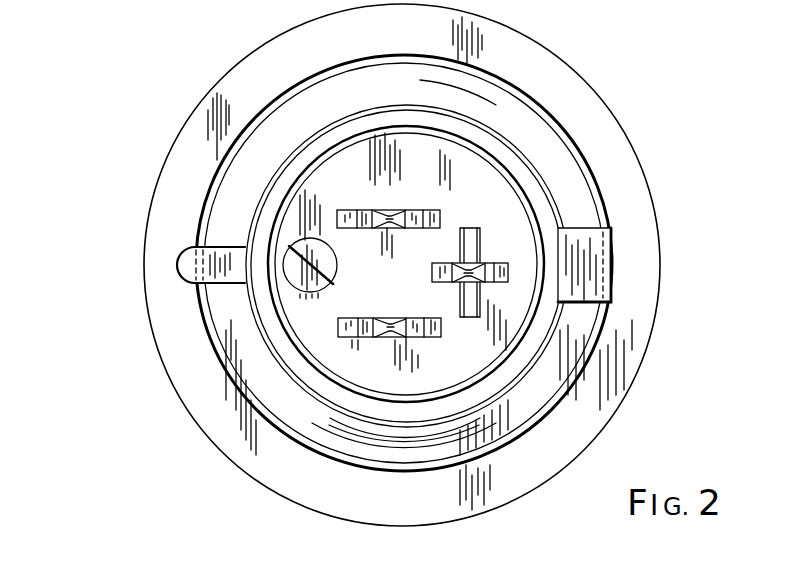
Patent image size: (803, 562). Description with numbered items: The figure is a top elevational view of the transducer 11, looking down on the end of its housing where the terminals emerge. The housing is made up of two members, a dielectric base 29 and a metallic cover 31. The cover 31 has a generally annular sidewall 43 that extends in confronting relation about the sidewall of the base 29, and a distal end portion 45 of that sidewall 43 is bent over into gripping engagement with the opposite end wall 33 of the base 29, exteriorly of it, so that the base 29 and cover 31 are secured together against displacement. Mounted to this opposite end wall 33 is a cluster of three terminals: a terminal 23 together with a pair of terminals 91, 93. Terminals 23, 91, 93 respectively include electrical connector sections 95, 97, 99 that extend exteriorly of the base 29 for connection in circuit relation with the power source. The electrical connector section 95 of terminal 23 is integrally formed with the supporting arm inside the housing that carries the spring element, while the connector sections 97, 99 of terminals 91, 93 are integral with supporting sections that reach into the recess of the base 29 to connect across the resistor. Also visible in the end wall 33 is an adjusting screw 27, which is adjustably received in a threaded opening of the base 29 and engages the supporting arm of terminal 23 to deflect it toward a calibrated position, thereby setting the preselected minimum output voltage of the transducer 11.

The transducer 11 is at (112, 112).
The terminal 23 is at (481, 297).
The adjusting screw 27 is at (337, 268).
The base 29 is at (527, 175).
The cover 31 is at (640, 163).
The opposite end wall 33 is at (600, 213).
The sidewall 43 is at (652, 198).
The distal end portion 45 is at (612, 150).
The terminal 91 is at (376, 201).
The terminal 93 is at (389, 330).
The electrical connector section 95 is at (449, 266).
The electrical connector section 97 is at (388, 212).
The electrical connector section 99 is at (387, 318).